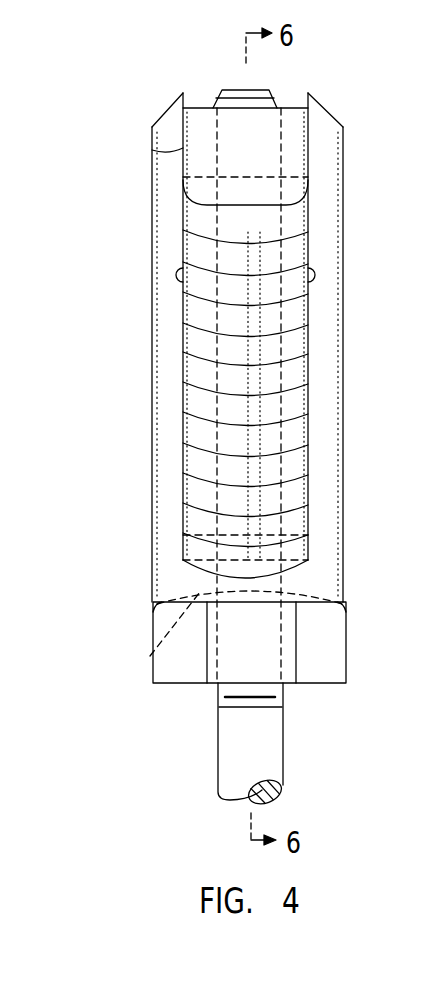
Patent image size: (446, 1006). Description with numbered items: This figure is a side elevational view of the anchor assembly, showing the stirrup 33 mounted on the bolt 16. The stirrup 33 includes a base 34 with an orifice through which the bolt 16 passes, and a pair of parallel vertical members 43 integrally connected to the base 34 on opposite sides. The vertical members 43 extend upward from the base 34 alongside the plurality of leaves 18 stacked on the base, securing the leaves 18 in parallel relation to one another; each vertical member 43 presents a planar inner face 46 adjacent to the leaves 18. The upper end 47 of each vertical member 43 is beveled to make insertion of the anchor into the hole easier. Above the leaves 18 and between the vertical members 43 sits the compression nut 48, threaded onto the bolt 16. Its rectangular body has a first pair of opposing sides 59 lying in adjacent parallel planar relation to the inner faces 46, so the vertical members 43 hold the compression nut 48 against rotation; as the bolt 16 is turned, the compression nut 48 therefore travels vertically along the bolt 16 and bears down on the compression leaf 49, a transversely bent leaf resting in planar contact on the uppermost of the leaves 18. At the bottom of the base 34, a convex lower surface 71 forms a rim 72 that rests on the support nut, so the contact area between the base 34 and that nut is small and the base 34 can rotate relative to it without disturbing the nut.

The bolt 16 is at (212, 750).
The leaves 18 is at (196, 295).
The stirrup 33 is at (146, 432).
The base 34 is at (165, 582).
The vertical members 43 is at (146, 186).
The planar inner face 46 is at (176, 270).
The upper end 47 is at (162, 118).
The compression nut 48 is at (300, 152).
The compression leaf 49 is at (308, 246).
The first pair of opposing sides 59 is at (152, 150).
The convex lower surface 71 is at (150, 656).
The rim 72 is at (155, 604).